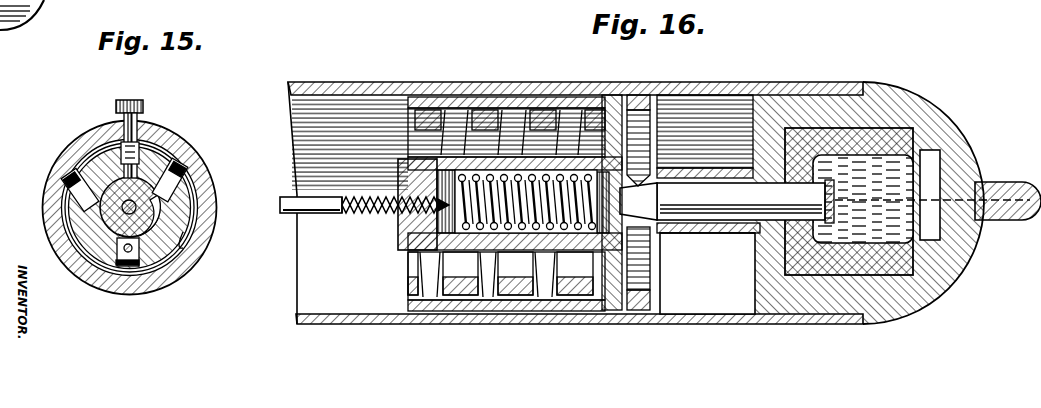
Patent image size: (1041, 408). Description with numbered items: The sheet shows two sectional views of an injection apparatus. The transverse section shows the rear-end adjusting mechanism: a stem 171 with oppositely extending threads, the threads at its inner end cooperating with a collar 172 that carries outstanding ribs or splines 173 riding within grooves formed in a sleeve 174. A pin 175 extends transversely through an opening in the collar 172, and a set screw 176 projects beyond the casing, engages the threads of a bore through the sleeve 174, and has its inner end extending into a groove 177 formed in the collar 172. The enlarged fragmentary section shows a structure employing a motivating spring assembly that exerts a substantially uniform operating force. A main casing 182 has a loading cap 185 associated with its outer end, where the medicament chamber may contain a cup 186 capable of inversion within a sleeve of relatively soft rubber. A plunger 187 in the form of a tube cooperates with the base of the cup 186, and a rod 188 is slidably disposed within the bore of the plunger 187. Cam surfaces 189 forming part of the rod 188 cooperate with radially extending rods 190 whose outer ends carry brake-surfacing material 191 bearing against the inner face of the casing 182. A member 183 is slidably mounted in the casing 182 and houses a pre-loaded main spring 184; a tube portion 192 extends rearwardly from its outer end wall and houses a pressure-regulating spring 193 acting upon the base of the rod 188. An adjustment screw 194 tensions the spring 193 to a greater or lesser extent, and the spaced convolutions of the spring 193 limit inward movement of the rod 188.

In FIG. 15, the stem 171 is at (143, 173).
In FIG. 15, the collar 172 is at (82, 206).
In FIG. 15, the ribs or splines 173 is at (72, 178).
In FIG. 15, the sleeve 174 is at (183, 237).
In FIG. 15, the pin 175 is at (130, 273).
In FIG. 15, the set screw 176 is at (135, 103).
In FIG. 15, the groove 177 is at (165, 135).
In FIG. 16, the main casing 182 is at (525, 80).
In FIG. 16, the member 183 is at (443, 80).
In FIG. 16, the pre-loaded main spring 184 is at (560, 80).
In FIG. 16, the loading cap 185 is at (930, 124).
In FIG. 16, the cup 186 is at (838, 308).
In FIG. 16, the plunger 187 is at (728, 236).
In FIG. 16, the rod 188 is at (830, 199).
In FIG. 16, the cam surfaces 189 is at (667, 235).
In FIG. 16, the radially extending rods 190 is at (632, 275).
In FIG. 16, the brake-surfacing material 191 is at (650, 80).
In FIG. 16, the tube portion 192 is at (442, 248).
In FIG. 16, the pressure-regulating spring 193 is at (527, 245).
In FIG. 16, the adjustment screw 194 is at (324, 215).